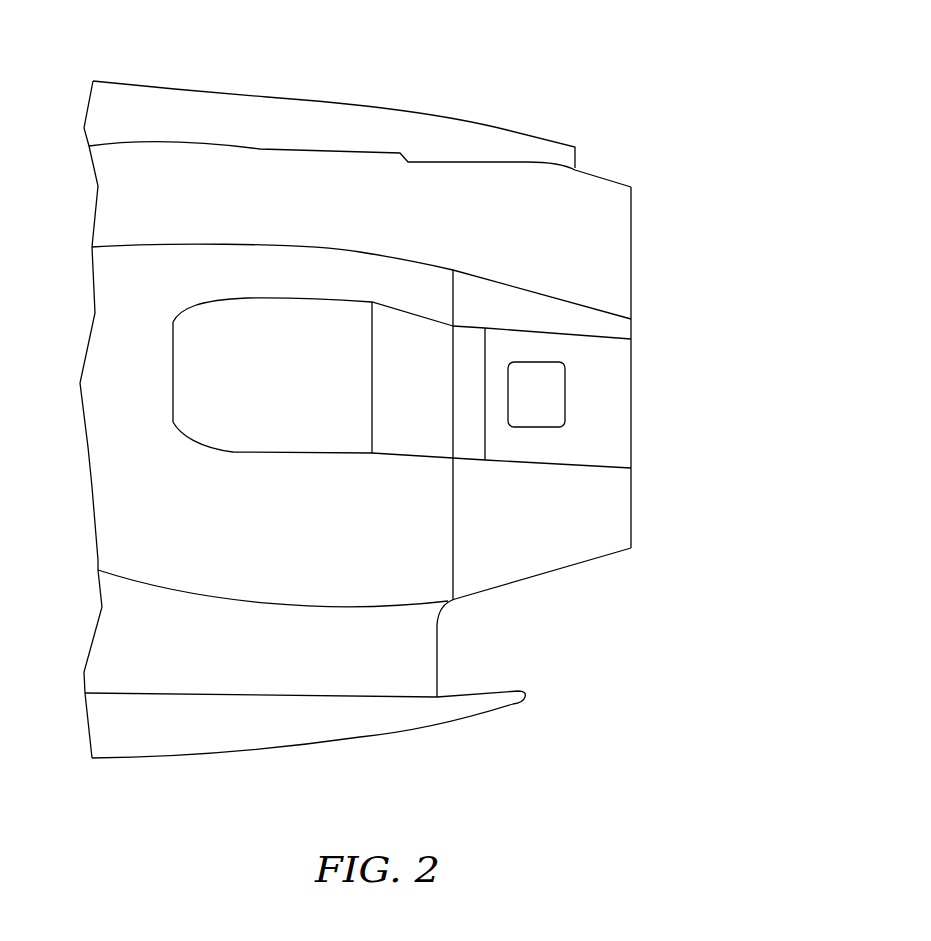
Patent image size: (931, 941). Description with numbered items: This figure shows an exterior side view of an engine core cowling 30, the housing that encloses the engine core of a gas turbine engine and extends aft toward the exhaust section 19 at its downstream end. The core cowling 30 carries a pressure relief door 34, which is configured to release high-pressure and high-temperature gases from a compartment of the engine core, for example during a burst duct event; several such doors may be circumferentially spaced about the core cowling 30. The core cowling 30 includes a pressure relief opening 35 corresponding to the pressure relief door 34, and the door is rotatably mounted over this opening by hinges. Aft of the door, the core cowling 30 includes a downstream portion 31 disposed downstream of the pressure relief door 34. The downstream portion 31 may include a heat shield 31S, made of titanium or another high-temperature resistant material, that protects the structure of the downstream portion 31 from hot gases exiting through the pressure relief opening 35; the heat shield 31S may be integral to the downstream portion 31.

The core cowling 30 is at (527, 108).
The exhaust section 19 is at (637, 312).
The downstream portion 31 is at (618, 377).
The heat shield 31S is at (625, 392).
The pressure relief door 34 is at (560, 407).
The pressure relief opening 35 is at (548, 432).